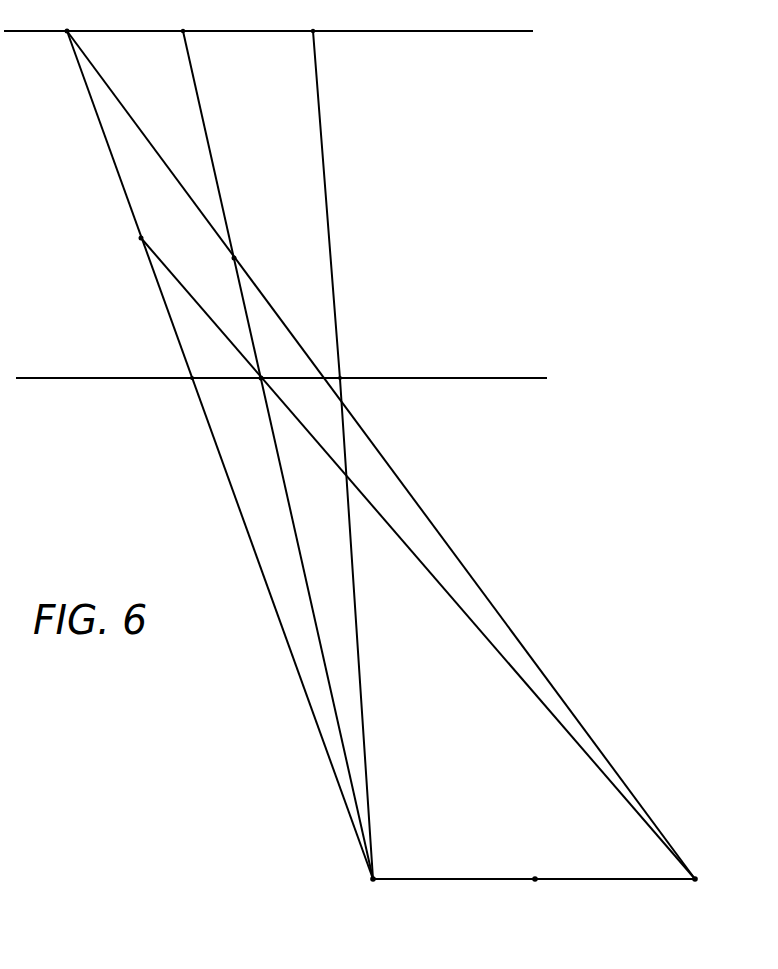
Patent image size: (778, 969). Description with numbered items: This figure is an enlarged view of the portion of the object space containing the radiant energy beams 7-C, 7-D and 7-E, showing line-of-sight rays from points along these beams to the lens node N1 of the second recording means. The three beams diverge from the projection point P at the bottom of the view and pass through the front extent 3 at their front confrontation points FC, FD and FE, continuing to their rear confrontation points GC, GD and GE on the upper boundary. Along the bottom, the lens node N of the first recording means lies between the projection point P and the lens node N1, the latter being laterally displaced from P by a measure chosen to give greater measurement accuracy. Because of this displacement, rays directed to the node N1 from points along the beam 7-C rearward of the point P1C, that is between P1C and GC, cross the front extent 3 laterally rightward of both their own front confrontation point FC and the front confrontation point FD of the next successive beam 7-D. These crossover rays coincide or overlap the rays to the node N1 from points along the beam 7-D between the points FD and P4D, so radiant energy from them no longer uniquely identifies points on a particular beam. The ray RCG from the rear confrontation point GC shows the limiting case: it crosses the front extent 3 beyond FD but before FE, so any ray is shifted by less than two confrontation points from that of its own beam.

The rear confrontation point GC is at (67, 31).
The rear confrontation point GD is at (183, 31).
The rear confrontation point GE is at (313, 31).
The radiant energy beam 7-C is at (125, 199).
The radiant energy beam 7-D is at (208, 143).
The radiant energy beam 7-E is at (324, 167).
The front extent 3 is at (476, 380).
The line-of-sight ray RCG is at (440, 536).
The point on beam 7-C P1C is at (141, 238).
The point on beam 7-D P4D is at (234, 258).
The front confrontation point FC is at (192, 378).
The front confrontation point FD is at (261, 378).
The front confrontation point FE is at (340, 378).
The projection point P is at (530, 894).
The lens node N is at (535, 894).
The lens node N1 is at (698, 897).